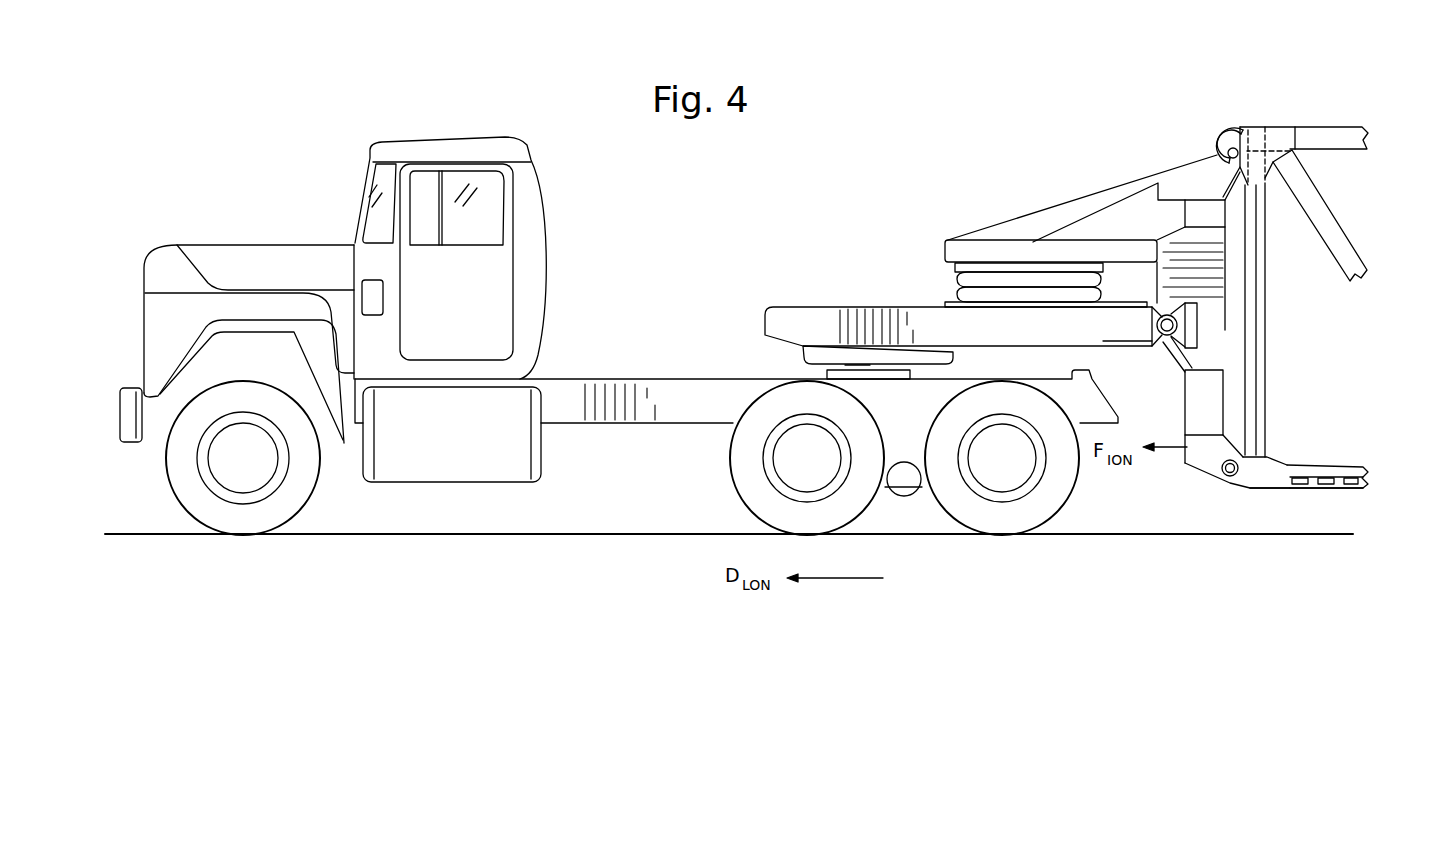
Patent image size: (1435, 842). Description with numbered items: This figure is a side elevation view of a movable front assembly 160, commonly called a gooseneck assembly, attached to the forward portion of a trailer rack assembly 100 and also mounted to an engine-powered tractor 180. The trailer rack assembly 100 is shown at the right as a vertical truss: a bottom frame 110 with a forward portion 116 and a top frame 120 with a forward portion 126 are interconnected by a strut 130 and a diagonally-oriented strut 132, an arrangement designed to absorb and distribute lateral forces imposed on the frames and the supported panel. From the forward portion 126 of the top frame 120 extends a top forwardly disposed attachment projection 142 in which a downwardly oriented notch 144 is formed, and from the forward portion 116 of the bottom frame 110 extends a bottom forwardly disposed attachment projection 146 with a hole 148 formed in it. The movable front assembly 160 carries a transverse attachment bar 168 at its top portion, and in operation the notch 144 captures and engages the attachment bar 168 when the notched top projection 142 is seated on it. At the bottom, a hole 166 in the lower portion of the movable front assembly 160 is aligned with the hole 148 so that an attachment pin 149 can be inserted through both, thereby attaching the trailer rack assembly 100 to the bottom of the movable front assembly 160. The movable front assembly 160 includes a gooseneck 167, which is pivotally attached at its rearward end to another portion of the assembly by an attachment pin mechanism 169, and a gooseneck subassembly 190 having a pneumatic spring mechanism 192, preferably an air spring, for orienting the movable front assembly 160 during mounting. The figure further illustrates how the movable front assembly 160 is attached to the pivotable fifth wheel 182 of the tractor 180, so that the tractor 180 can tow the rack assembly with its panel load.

The trailer rack assembly 100 is at (1207, 112).
The bottom frame 110 is at (1300, 462).
The forward portion of bottom frame 116 is at (1278, 508).
The top frame 120 is at (1317, 145).
The forward portion of top frame 126 is at (1320, 112).
The strut 130 is at (1255, 320).
The diagonally-oriented strut 132 is at (1318, 210).
The top forwardly disposed attachment projection 142 is at (1240, 127).
The downwardly oriented notch 144 is at (1238, 172).
The bottom forwardly disposed attachment projection 146 is at (1243, 480).
The hole 148 is at (1227, 477).
The attachment pin 149 is at (1242, 458).
The movable front assembly 160 is at (1095, 182).
The hole 166 is at (1217, 473).
The gooseneck 167 is at (777, 320).
The transverse attachment bar 168 is at (1232, 143).
The attachment pin mechanism 169 is at (1167, 297).
The engine-powered tractor 180 is at (672, 365).
The pivotable fifth wheel 182 is at (800, 362).
The gooseneck subassembly 190 is at (932, 252).
The pneumatic spring mechanism 192 is at (950, 282).